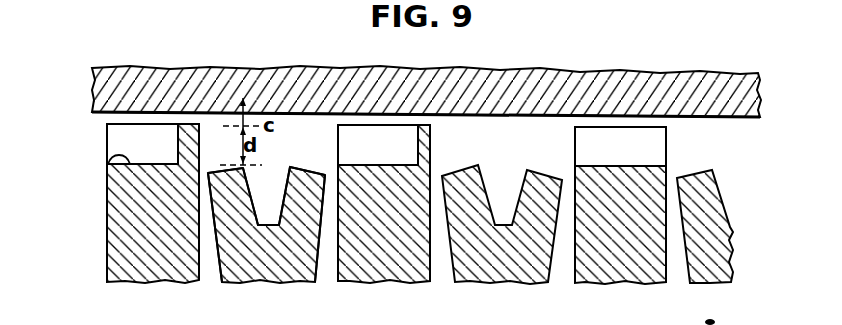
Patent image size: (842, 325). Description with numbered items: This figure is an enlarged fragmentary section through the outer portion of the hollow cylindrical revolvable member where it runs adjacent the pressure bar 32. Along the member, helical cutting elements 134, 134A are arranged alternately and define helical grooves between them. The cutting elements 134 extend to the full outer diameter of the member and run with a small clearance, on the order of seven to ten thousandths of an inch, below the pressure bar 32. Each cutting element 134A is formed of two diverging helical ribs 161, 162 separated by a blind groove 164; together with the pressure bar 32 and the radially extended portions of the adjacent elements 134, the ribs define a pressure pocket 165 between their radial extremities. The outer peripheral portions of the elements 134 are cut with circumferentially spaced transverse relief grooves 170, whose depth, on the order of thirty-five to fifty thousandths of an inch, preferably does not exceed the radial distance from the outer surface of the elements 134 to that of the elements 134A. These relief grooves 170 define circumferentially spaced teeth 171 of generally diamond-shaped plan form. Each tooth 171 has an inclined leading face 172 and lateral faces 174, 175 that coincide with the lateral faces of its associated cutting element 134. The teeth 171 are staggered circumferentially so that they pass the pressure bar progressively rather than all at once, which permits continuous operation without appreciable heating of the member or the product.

The pressure bar 32 is at (92, 88).
The helical cutting element 134 is at (115, 218).
The helical cutting element 134A is at (250, 282).
The helical rib 161 is at (208, 173).
The helical rib 162 is at (313, 170).
The blind groove 164 is at (268, 225).
The pressure pocket 165 is at (283, 147).
The transverse relief groove 170 is at (108, 164).
The tooth 171 is at (140, 124).
The inclined leading face 172 is at (113, 133).
The lateral face 174 is at (107, 144).
The lateral face 175 is at (666, 137).